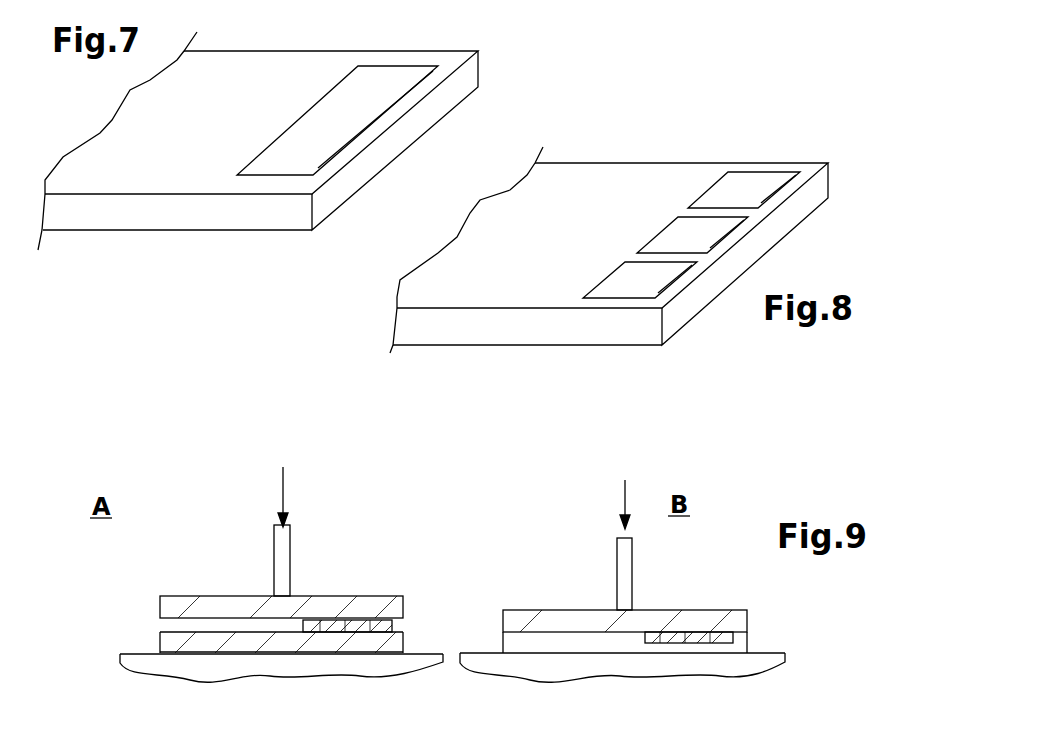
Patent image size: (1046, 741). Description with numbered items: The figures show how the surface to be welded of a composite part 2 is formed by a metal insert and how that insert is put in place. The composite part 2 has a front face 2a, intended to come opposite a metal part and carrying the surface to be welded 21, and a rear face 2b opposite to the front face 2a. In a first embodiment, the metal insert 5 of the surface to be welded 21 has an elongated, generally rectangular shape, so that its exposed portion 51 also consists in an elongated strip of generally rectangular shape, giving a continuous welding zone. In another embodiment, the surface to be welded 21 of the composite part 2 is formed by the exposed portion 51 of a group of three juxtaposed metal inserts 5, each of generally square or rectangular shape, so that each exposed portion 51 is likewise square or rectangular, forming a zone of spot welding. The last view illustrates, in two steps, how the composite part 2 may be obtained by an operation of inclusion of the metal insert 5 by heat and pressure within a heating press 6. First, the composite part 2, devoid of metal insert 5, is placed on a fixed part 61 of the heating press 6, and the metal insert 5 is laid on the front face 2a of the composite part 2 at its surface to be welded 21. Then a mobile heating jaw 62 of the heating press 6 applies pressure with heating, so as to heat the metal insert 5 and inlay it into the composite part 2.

In FIG. 7, the composite part 2 is at (258, 165).
In FIG. 8, the composite part 2 is at (609, 254).
In FIG. 9, the composite part 2 is at (367, 684).
In FIG. 7, the front face 2a is at (250, 78).
In FIG. 8, the front face 2a is at (607, 190).
In FIG. 9, the front face 2a is at (193, 646).
In FIG. 7, the rear face 2b is at (172, 244).
In FIG. 8, the rear face 2b is at (527, 357).
In FIG. 9, the rear face 2b is at (303, 668).
In FIG. 7, the metal insert 5 is at (277, 120).
In FIG. 8, the metal insert 5 is at (722, 198).
In FIG. 9, the metal insert 5 is at (358, 617).
In FIG. 7, the exposed portion 51 is at (277, 120).
In FIG. 8, the exposed portion 51 is at (722, 198).
In FIG. 7, the surface to be welded 21 is at (277, 140).
In FIG. 8, the surface to be welded 21 is at (660, 272).
In FIG. 9, the heating press 6 is at (236, 532).
In FIG. 9, the fixed part 61 is at (137, 660).
In FIG. 9, the mobile heating jaw 62 is at (197, 607).